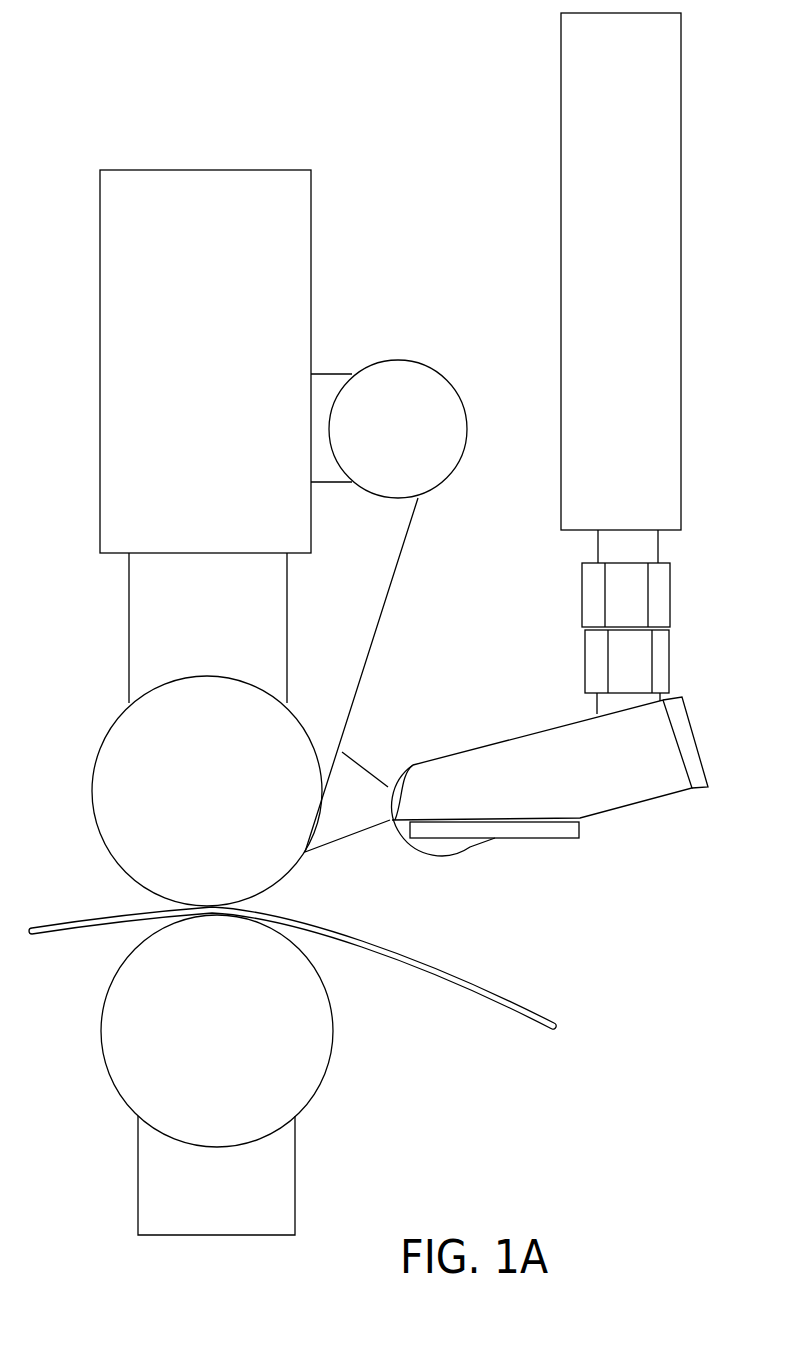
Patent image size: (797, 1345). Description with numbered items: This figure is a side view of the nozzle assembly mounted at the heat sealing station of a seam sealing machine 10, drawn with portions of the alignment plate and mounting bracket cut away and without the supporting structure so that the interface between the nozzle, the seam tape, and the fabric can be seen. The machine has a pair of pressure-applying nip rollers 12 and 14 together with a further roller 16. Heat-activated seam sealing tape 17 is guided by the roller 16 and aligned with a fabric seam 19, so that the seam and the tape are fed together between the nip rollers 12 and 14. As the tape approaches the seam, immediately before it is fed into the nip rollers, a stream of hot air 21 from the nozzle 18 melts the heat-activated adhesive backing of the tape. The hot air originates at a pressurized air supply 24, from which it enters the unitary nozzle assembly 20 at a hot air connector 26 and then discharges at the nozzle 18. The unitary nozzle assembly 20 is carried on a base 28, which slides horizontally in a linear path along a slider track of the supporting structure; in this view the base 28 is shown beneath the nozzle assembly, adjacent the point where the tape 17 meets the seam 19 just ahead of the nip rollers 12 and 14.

The seam sealing machine 10 is at (177, 207).
The nip roller 12 is at (122, 763).
The nip roller 14 is at (233, 1065).
The roller 16 is at (398, 397).
The heat-activated seam sealing tape 17 is at (372, 650).
The nozzle 18 is at (400, 828).
The fabric seam 19 is at (455, 982).
The unitary nozzle assembly 20 is at (638, 777).
The stream of hot air 21 is at (363, 765).
The pressurized air supply 24 is at (635, 212).
The hot air connector 26 is at (637, 668).
The base 28 is at (552, 828).